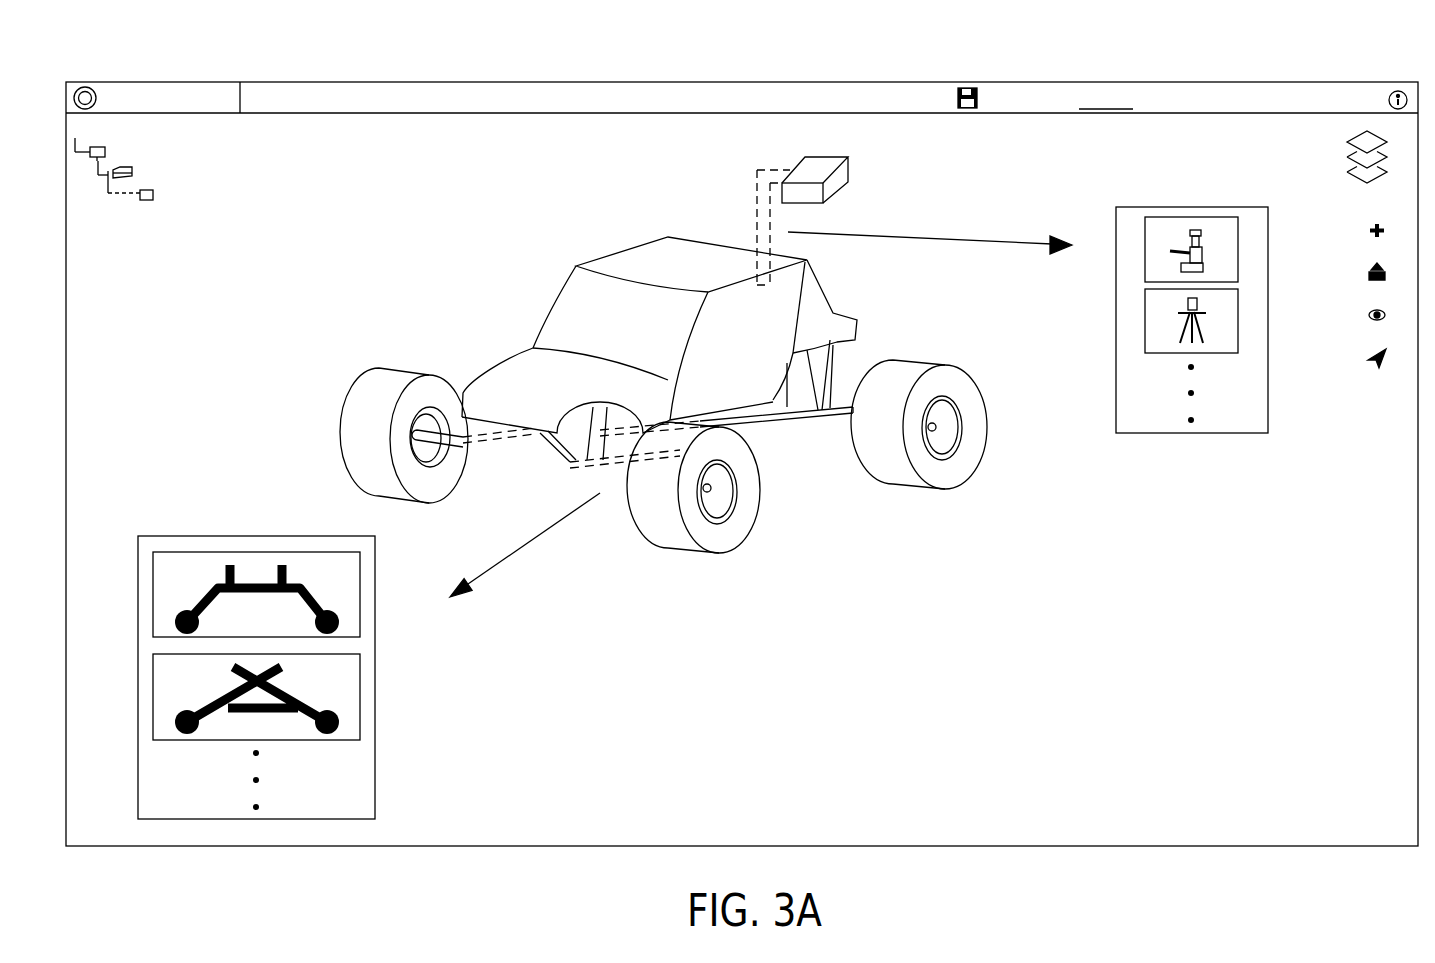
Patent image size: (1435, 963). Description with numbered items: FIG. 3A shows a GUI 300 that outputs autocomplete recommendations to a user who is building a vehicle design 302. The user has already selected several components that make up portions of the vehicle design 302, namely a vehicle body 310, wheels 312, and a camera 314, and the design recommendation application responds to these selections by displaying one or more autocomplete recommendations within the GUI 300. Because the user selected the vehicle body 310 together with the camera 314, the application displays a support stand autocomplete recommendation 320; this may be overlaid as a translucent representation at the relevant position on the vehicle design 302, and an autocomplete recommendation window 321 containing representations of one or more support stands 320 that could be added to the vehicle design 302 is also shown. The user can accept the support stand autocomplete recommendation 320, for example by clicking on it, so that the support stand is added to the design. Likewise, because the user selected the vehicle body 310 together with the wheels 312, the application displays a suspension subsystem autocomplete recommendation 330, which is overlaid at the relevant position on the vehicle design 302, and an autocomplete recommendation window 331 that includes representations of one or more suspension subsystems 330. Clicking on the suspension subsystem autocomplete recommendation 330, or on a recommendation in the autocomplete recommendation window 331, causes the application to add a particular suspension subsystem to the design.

The GUI 300 is at (849, 40).
The vehicle design 302 is at (663, 424).
The vehicle body 310 is at (552, 305).
The wheels 312 is at (420, 500).
The camera 314 is at (848, 165).
The support stand autocomplete recommendation 320 is at (757, 198).
The autocomplete recommendation window 321 is at (1225, 435).
The suspension subsystem autocomplete recommendation 330 is at (782, 420).
The autocomplete recommendation window 331 is at (375, 677).